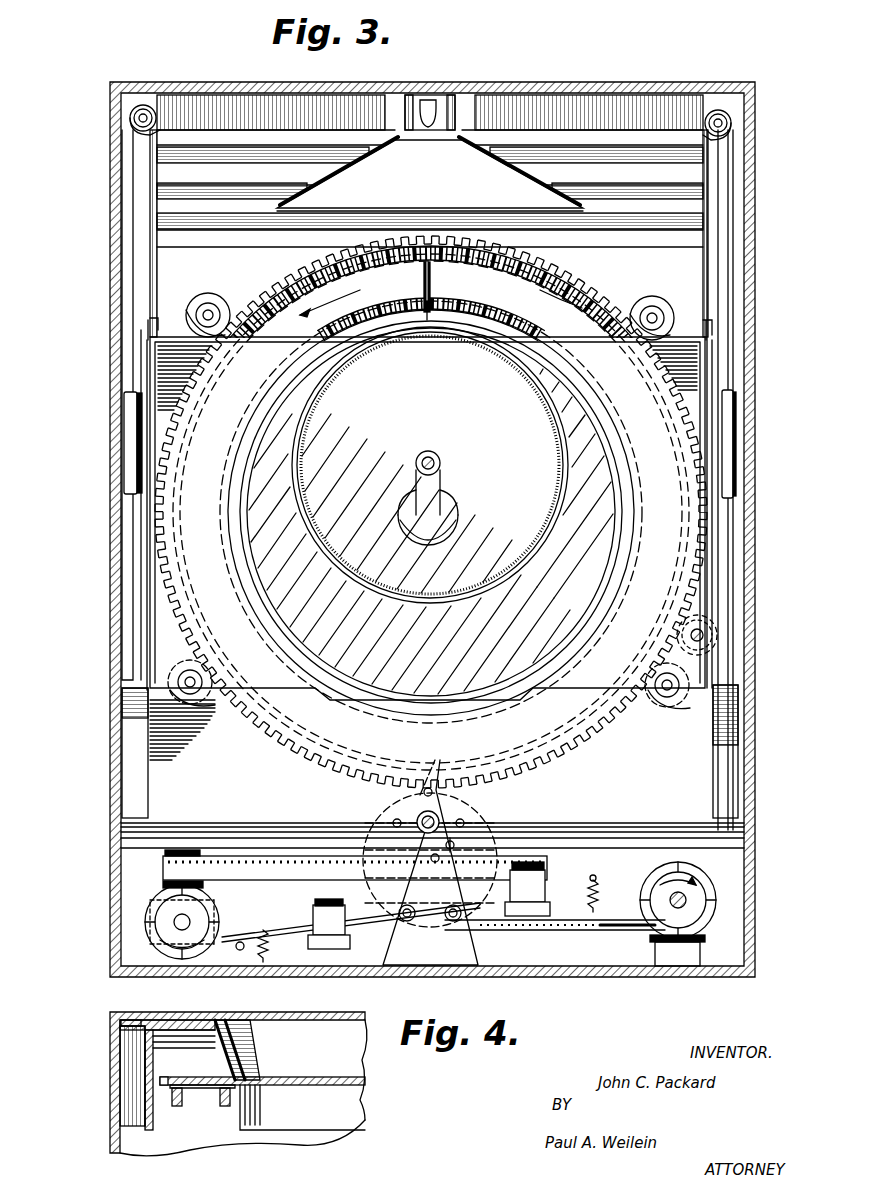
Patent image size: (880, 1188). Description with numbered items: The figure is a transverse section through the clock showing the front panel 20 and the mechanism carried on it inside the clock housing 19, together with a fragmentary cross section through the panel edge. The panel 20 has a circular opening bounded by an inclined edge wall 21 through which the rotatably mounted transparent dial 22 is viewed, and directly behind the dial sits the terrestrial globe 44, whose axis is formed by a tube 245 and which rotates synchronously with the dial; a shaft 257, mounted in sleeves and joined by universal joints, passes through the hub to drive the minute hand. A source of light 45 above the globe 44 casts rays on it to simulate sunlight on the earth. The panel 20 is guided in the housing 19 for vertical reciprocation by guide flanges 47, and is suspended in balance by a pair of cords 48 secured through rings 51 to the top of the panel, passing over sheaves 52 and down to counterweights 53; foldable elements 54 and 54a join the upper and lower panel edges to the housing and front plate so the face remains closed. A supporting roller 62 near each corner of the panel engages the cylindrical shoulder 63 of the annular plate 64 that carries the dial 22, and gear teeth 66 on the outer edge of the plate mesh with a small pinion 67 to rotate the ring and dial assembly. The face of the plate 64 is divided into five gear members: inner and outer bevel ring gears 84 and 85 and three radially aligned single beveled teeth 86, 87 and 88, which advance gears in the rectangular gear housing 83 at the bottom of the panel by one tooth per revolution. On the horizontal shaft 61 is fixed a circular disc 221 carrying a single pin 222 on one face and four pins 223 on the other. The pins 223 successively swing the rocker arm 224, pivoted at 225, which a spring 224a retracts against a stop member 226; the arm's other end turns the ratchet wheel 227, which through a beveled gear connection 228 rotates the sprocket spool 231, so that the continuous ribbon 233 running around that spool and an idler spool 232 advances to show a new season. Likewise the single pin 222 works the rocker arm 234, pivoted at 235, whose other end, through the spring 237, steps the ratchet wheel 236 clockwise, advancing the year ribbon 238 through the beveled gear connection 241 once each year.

In FIG. 3, the clock housing 19 is at (760, 318).
In FIG. 4, the clock housing 19 is at (110, 1122).
In FIG. 3, the front panel 20 is at (165, 272).
In FIG. 4, the front panel 20 is at (180, 1013).
In FIG. 4, the inclined edge wall 21 is at (232, 1035).
In FIG. 3, the transparent dial 22 is at (431, 512).
In FIG. 4, the transparent dial 22 is at (330, 1077).
In FIG. 3, the terrestrial globe 44 is at (405, 592).
In FIG. 3, the source of light 45 is at (428, 128).
In FIG. 3, the guide flanges 47 is at (130, 765).
In FIG. 4, the guide flanges 47 is at (123, 1024).
In FIG. 3, the cords 48 is at (150, 190).
In FIG. 3, the rings 51 is at (150, 318).
In FIG. 3, the sheaves 52 is at (130, 108).
In FIG. 3, the counterweights 53 is at (130, 418).
In FIG. 3, the foldable element 54 is at (515, 150).
In FIG. 3, the foldable element 54a is at (740, 838).
In FIG. 3, the horizontal shaft 61 is at (440, 800).
In FIG. 3, the supporting roller 62 is at (212, 300).
In FIG. 3, the cylindrical shoulder 63 is at (600, 310).
In FIG. 3, the annular plate 64 is at (582, 306).
In FIG. 4, the annular plate 64 is at (200, 1077).
In FIG. 3, the gear teeth 66 is at (280, 290).
In FIG. 3, the pinion 67 is at (715, 628).
In FIG. 3, the gear housing 83 is at (630, 734).
In FIG. 3, the bevel ring gear 84 is at (400, 305).
In FIG. 4, the bevel ring gear 84 is at (225, 1107).
In FIG. 3, the bevel ring gear 85 is at (540, 272).
In FIG. 4, the bevel ring gear 85 is at (178, 1107).
In FIG. 3, the beveled tooth 86 is at (440, 296).
In FIG. 3, the beveled tooth 87 is at (432, 290).
In FIG. 3, the beveled tooth 88 is at (424, 274).
In FIG. 3, the circular disc 221 is at (458, 832).
In FIG. 3, the pin 222 is at (452, 850).
In FIG. 3, the pins 223 is at (428, 788).
In FIG. 3, the rocker arm 224 is at (305, 925).
In FIG. 3, the spring 224a is at (268, 956).
In FIG. 3, the pivot 225 is at (405, 922).
In FIG. 3, the stop member 226 is at (240, 940).
In FIG. 3, the ratchet wheel 227 is at (150, 922).
In FIG. 3, the beveled gear connection 228 is at (163, 886).
In FIG. 3, the sprocket spool 231 is at (165, 856).
In FIG. 3, the idler spool 232 is at (545, 862).
In FIG. 3, the continuous ribbon 233 is at (355, 868).
In FIG. 3, the rocker arm 234 is at (545, 930).
In FIG. 3, the pivot 235 is at (458, 922).
In FIG. 3, the ratchet wheel 236 is at (668, 867).
In FIG. 3, the spring 237 is at (597, 905).
In FIG. 3, the ribbon 238 is at (612, 932).
In FIG. 3, the beveled gear connection 241 is at (700, 940).
In FIG. 3, the tube 245 is at (442, 465).
In FIG. 3, the shaft 257 is at (435, 456).